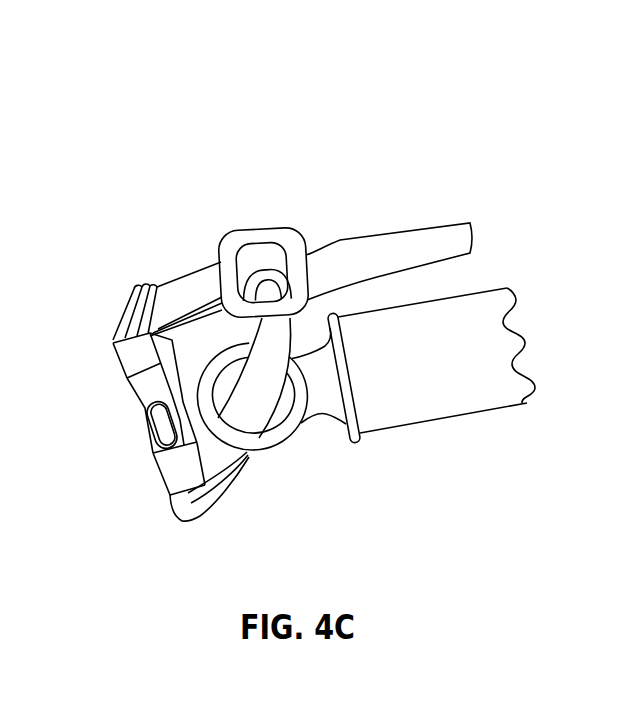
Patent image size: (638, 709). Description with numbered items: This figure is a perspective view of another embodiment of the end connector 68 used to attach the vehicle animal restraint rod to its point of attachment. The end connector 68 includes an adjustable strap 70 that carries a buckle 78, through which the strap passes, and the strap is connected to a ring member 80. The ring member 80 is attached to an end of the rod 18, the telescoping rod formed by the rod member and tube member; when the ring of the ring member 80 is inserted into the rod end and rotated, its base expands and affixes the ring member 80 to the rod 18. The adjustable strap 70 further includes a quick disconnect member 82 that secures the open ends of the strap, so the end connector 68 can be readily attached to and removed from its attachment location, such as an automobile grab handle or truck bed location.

The end connector 68 is at (192, 230).
The adjustable strap 70 is at (365, 265).
The buckle 78 is at (278, 225).
The ring member 80 is at (313, 423).
The quick disconnect member 82 is at (133, 396).
The rod 18 is at (443, 369).